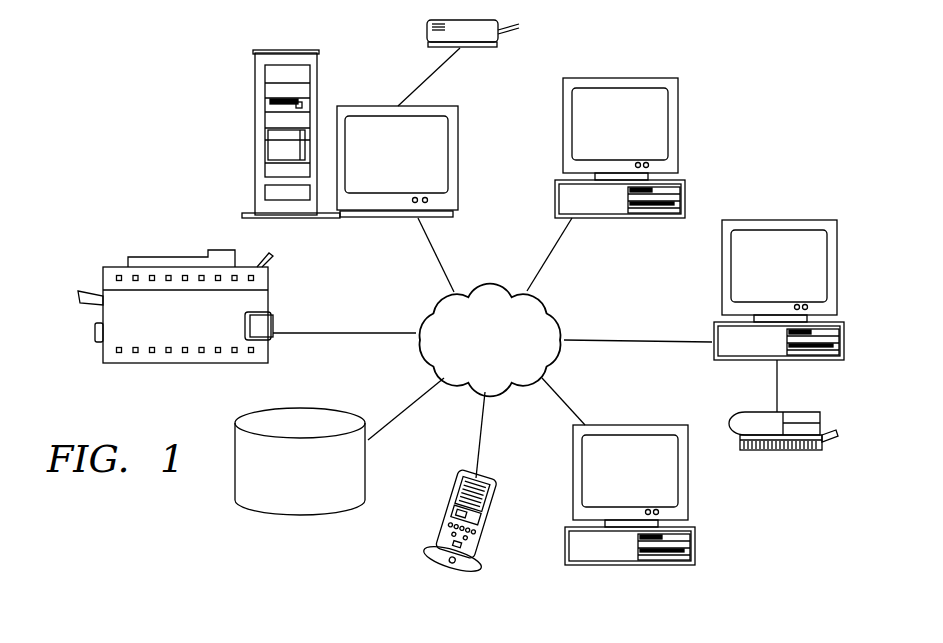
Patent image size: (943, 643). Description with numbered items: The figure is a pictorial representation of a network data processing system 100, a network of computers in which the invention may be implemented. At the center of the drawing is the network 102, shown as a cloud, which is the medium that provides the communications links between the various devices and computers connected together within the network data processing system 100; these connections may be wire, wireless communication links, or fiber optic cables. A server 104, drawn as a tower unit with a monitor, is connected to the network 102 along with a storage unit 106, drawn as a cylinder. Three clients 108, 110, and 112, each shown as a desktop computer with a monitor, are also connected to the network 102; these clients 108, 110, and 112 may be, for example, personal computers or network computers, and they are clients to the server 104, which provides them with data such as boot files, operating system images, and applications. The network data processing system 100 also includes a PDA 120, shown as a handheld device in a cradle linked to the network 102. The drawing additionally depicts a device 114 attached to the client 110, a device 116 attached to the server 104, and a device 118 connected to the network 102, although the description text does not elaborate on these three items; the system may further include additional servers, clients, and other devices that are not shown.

The network data processing system 100 is at (758, 110).
The network 102 is at (469, 353).
The server 104 is at (376, 163).
The storage unit 106 is at (280, 486).
The client 108 is at (600, 135).
The client 110 is at (757, 276).
The client 112 is at (609, 484).
The peripheral device 114 is at (778, 450).
The modem 116 is at (427, 33).
The printer 118 is at (160, 331).
The PDA 120 is at (453, 563).